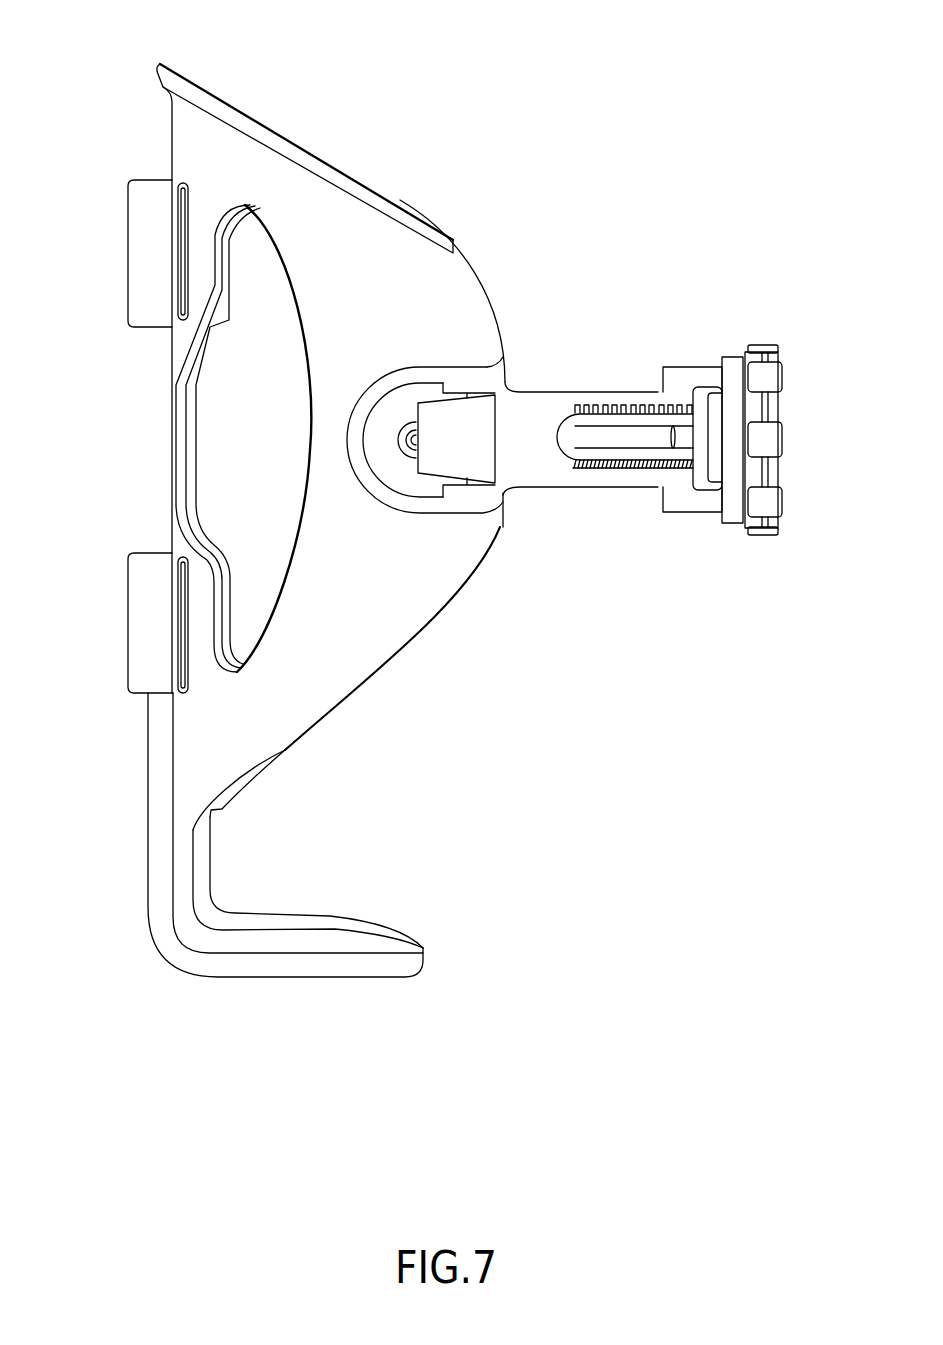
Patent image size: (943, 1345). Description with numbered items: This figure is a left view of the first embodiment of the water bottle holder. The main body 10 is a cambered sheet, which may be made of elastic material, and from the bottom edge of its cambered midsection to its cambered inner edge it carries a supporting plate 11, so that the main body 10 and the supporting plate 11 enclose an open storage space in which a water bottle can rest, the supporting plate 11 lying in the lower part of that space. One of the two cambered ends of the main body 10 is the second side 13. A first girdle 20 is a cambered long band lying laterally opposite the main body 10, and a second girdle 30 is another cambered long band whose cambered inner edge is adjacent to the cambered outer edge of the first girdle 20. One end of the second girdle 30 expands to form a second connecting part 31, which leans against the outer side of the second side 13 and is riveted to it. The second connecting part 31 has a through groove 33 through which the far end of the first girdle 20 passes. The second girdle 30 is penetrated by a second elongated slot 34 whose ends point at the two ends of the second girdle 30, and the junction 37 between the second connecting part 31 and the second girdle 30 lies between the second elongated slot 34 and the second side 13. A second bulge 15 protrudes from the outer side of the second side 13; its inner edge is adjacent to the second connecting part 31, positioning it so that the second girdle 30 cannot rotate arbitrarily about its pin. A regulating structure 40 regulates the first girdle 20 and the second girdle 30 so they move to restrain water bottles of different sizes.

The main body 10 is at (328, 121).
The supporting plate 11 is at (383, 955).
The second side 13 is at (483, 316).
The second bulge 15 is at (432, 503).
The first girdle 20 is at (458, 418).
The second girdle 30 is at (612, 472).
The second connecting part 31 is at (403, 480).
The through groove 33 is at (495, 440).
The second elongated slot 34 is at (557, 392).
The junction 37 is at (525, 390).
The regulating structure 40 is at (759, 313).